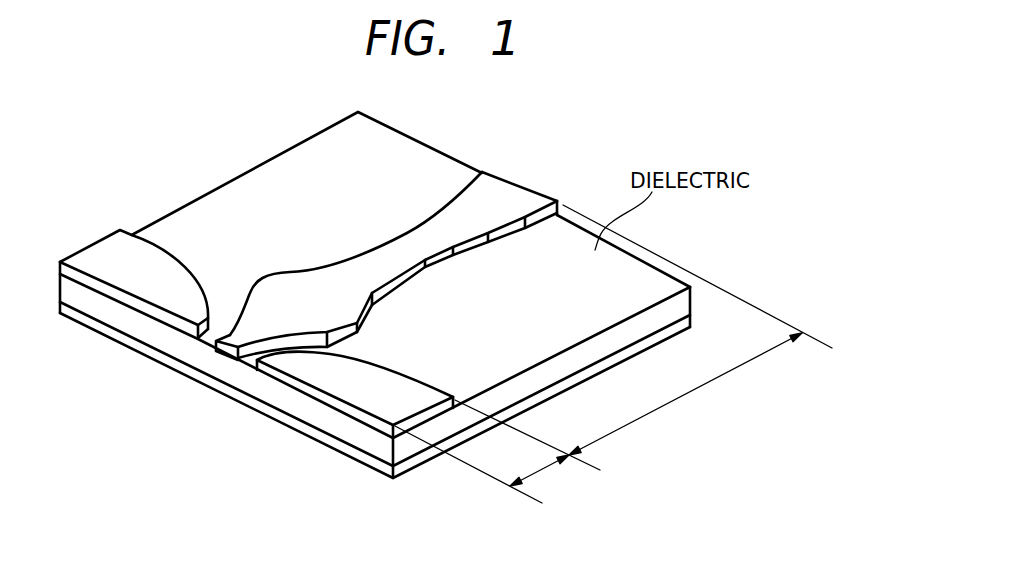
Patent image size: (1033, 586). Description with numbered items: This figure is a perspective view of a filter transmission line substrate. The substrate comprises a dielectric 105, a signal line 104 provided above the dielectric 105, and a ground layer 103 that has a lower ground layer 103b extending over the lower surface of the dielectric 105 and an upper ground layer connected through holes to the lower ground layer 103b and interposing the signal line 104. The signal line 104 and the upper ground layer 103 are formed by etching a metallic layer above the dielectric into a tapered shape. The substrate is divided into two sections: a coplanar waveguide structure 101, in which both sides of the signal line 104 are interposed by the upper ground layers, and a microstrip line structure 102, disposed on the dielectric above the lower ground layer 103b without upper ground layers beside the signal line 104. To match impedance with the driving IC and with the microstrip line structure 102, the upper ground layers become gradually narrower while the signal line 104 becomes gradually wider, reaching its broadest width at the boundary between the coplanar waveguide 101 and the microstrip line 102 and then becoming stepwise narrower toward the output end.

The coplanar waveguide structure 101 is at (545, 468).
The microstrip line structure 102 is at (690, 395).
The ground layer 103 is at (107, 253).
The lower ground layer 103b is at (228, 388).
The signal line 104 is at (216, 340).
The dielectric 105 is at (262, 163).